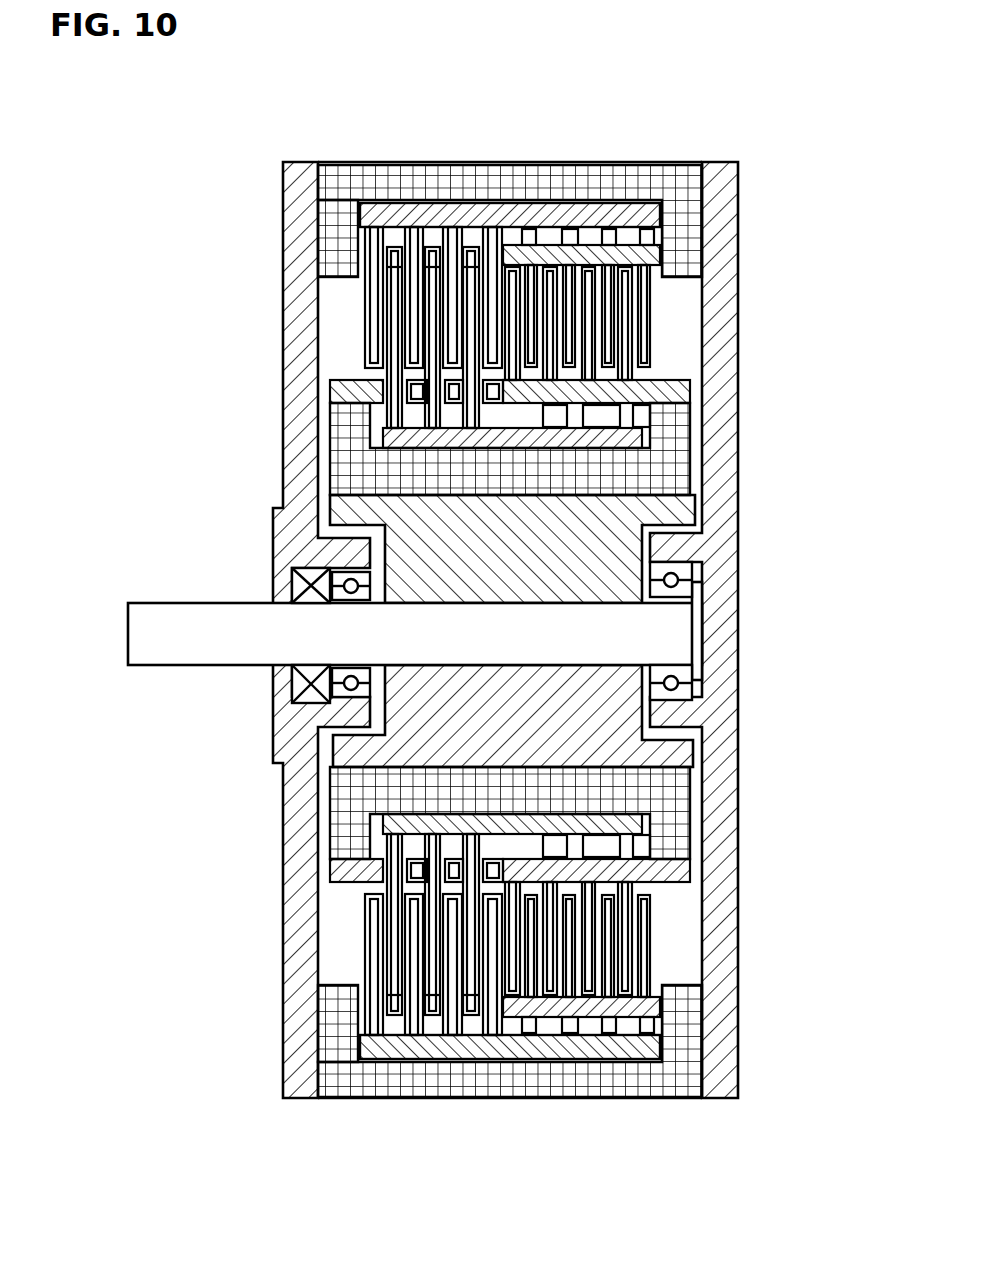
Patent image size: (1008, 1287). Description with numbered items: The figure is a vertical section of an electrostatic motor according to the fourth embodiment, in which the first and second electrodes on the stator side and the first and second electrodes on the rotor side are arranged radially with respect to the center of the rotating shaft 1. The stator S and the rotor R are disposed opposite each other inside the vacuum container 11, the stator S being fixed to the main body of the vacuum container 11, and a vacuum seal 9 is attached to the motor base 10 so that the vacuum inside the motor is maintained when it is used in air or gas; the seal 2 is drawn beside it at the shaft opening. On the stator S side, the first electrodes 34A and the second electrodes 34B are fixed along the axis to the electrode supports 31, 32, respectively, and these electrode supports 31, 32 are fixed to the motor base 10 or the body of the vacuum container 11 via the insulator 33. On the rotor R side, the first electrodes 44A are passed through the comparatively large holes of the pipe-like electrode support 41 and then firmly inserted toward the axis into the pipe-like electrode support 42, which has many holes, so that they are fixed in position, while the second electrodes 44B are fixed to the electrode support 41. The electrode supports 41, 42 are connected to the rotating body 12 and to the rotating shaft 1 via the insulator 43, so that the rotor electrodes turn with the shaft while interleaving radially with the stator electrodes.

The rotating shaft 1 is at (215, 652).
The seal 2 is at (277, 763).
The vacuum seal 9 is at (273, 710).
The motor base 10 is at (298, 512).
The vacuum container 11 is at (437, 175).
The rotating body 12 is at (617, 723).
The electrode support 31 is at (392, 207).
The electrode support 32 is at (530, 248).
The insulator 33 is at (335, 245).
The first electrodes 34A is at (370, 327).
The second electrodes 34B is at (640, 322).
The electrode support 41 is at (690, 382).
The electrode support 42 is at (687, 430).
The insulator 43 is at (657, 475).
The first electrodes 44A is at (378, 925).
The second electrodes 44B is at (630, 918).
The rotor R is at (637, 807).
The stator S is at (555, 1068).